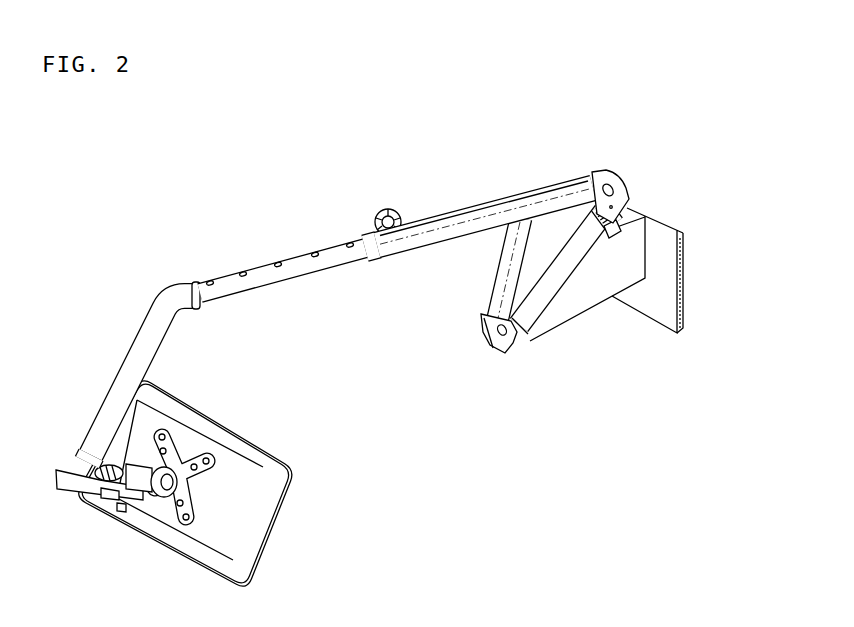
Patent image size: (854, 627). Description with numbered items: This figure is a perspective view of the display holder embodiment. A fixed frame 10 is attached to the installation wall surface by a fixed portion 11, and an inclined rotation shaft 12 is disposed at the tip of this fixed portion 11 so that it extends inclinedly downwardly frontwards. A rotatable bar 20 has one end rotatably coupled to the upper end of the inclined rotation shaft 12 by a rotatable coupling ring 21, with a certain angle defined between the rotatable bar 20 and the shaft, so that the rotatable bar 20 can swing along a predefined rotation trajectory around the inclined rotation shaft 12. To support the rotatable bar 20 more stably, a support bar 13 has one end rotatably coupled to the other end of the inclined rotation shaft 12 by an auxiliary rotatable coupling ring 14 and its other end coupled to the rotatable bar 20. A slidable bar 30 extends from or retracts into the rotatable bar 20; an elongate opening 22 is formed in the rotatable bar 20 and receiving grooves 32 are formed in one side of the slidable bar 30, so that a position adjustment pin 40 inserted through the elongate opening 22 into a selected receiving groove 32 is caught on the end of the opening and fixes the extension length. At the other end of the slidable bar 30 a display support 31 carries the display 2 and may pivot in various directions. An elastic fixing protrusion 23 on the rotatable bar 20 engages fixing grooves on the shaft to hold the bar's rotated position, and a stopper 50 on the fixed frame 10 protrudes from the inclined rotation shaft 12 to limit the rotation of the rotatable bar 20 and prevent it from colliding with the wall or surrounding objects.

The display 2 is at (257, 517).
The fixed frame 10 is at (632, 306).
The fixed portion 11 is at (668, 283).
The inclined rotation shaft 12 is at (552, 287).
The support bar 13 is at (493, 288).
The auxiliary rotatable coupling ring 14 is at (505, 357).
The rotatable bar 20 is at (608, 182).
The rotatable coupling ring 21 is at (617, 190).
The elongate opening 22 is at (497, 200).
The elastic fixing protrusion 23 is at (587, 212).
The slidable bar 30 is at (258, 268).
The display support 31 is at (172, 497).
The receiving grooves 32 is at (313, 251).
The position adjustment pin 40 is at (393, 212).
The stopper 50 is at (614, 232).